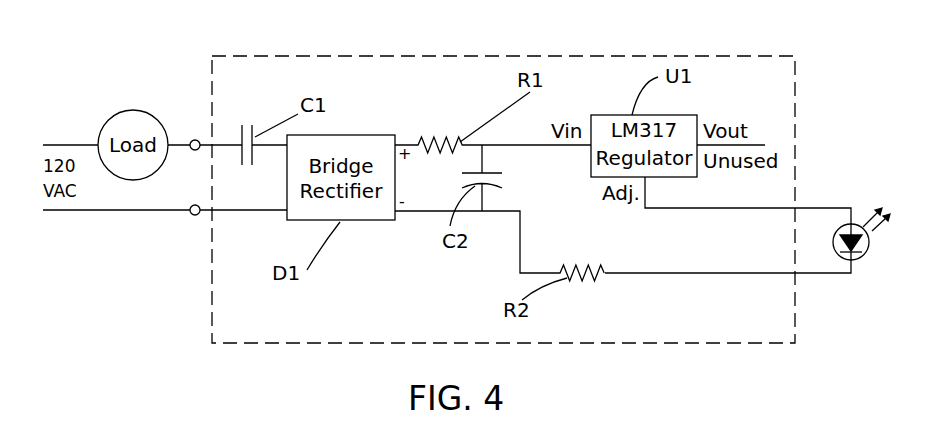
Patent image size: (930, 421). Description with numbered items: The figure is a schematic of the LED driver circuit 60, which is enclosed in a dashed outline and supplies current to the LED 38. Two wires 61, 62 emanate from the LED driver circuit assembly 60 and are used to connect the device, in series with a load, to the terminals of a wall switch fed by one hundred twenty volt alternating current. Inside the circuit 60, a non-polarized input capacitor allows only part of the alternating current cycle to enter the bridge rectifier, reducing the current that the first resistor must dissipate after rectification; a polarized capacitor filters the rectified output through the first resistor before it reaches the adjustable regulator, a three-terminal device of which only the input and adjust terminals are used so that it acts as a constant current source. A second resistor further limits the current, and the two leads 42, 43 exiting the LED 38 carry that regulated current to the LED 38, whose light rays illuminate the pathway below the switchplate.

The LED driver circuit 60 is at (479, 51).
The wire 61 is at (205, 140).
The wire 62 is at (208, 215).
The lead 43 is at (812, 207).
The lead 42 is at (810, 277).
The LED 38 is at (857, 263).